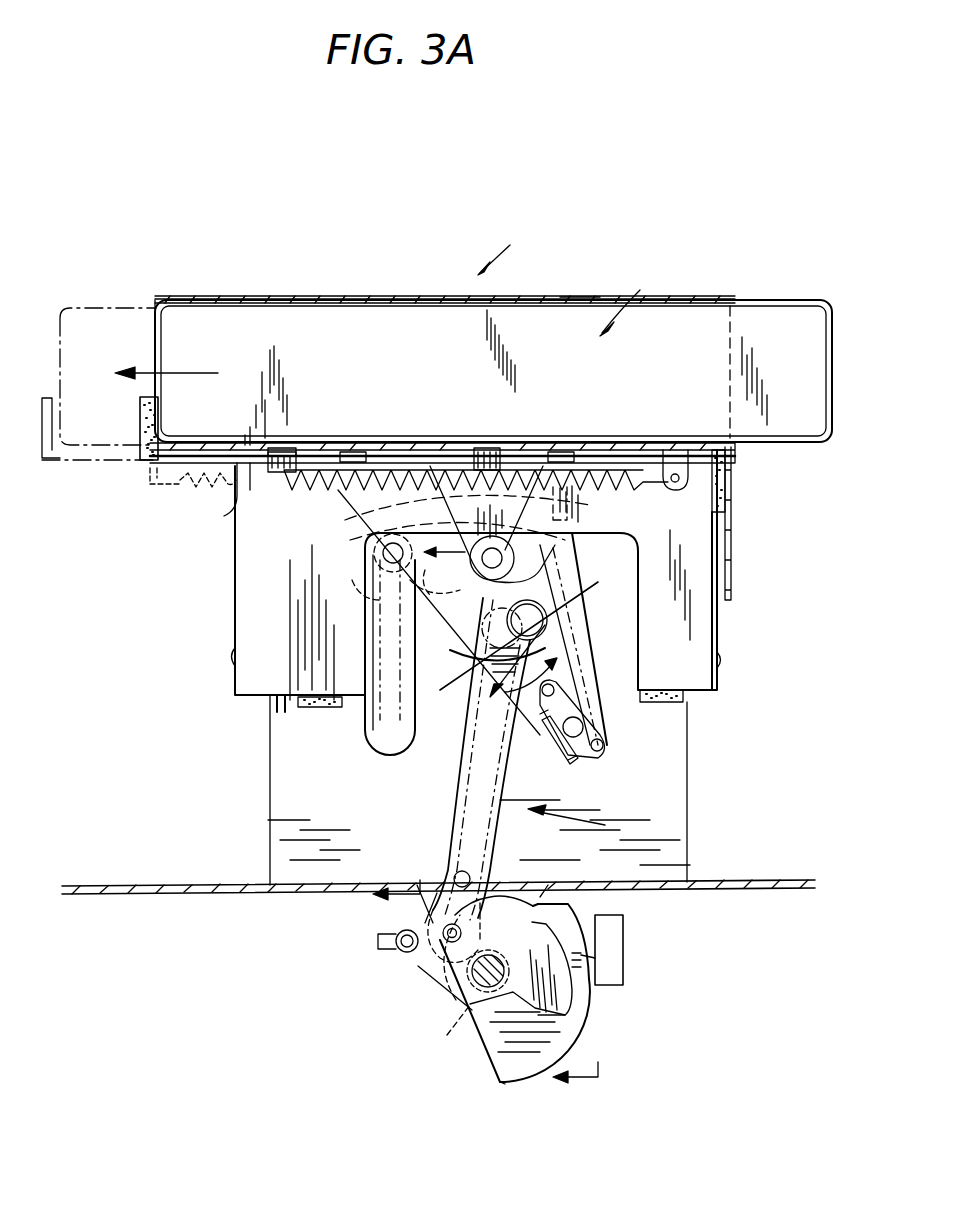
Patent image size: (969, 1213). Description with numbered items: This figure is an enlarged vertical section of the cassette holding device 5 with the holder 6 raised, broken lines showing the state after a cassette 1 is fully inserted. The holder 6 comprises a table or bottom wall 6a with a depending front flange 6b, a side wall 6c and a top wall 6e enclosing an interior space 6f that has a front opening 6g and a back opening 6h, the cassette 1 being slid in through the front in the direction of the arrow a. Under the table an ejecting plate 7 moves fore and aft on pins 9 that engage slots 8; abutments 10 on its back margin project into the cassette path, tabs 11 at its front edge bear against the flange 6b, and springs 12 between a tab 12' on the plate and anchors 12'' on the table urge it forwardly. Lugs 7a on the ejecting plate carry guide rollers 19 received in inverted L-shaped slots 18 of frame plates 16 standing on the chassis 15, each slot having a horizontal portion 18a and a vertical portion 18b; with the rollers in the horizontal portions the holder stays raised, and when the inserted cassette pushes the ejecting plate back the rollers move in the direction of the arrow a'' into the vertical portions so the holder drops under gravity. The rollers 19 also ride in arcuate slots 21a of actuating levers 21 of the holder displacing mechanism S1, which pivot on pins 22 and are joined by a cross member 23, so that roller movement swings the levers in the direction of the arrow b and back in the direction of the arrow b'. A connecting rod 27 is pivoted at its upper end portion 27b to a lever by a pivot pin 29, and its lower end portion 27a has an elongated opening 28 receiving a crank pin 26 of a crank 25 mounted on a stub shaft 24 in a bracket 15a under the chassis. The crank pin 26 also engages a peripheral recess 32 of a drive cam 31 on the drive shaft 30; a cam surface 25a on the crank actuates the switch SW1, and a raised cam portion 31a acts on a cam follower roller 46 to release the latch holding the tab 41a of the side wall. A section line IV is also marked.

The cassette 1 is at (785, 318).
The cassette holding device 5 is at (497, 250).
The holder 6 is at (365, 298).
The table or bottom wall 6a is at (385, 452).
The flange 6b is at (733, 563).
The side wall 6c is at (233, 606).
The top wall 6e is at (562, 298).
The interior space 6f is at (620, 300).
The front opening 6g is at (730, 298).
The back opening 6h is at (157, 297).
The ejecting member or plate 7 is at (457, 455).
The lugs 7a is at (475, 513).
The slots 8 is at (353, 452).
The pins 9 is at (285, 455).
The abutments 10 is at (140, 426).
The tabs 11 is at (725, 483).
The springs 12 is at (277, 486).
The tab 12' is at (220, 497).
The anchors 12'' is at (684, 490).
The chassis 15 is at (135, 886).
The bracket 15a is at (540, 895).
The frame plates 16 is at (290, 797).
The inverted L-shaped slots 18 is at (378, 642).
The horizontal slot portion 18a is at (440, 612).
The vertical slot portion 18b is at (465, 698).
The follower or guide rollers 19 is at (560, 557).
The actuating levers 21 is at (590, 700).
The arcuate slot 21a is at (360, 518).
The pivot pins 22 is at (583, 727).
The cross member 23 is at (575, 765).
The stub shaft 24 is at (447, 1027).
The crank 25 is at (497, 1052).
The cam surface 25a is at (508, 1082).
The crank pin 26 is at (432, 975).
The connecting rod 27 is at (480, 776).
The lower end portion 27a is at (495, 880).
The upper end portion 27b is at (582, 628).
The elongated opening 28 is at (456, 878).
The pivot pin 29 is at (531, 628).
The drive member or shaft 30 is at (498, 962).
The drive cam 31 is at (560, 978).
The radially raised peripheral portion 31a is at (620, 960).
The peripheral recess 32 is at (442, 931).
The tab 41a is at (318, 697).
The cam follower roller 46 is at (400, 952).
The holder displacing mechanism S1 is at (579, 820).
The switch SW1 is at (620, 937).
The arrow a is at (166, 360).
The arrow a'' is at (408, 575).
The arrow b is at (489, 661).
The arrow b' is at (542, 675).
The section IV is at (474, 992).